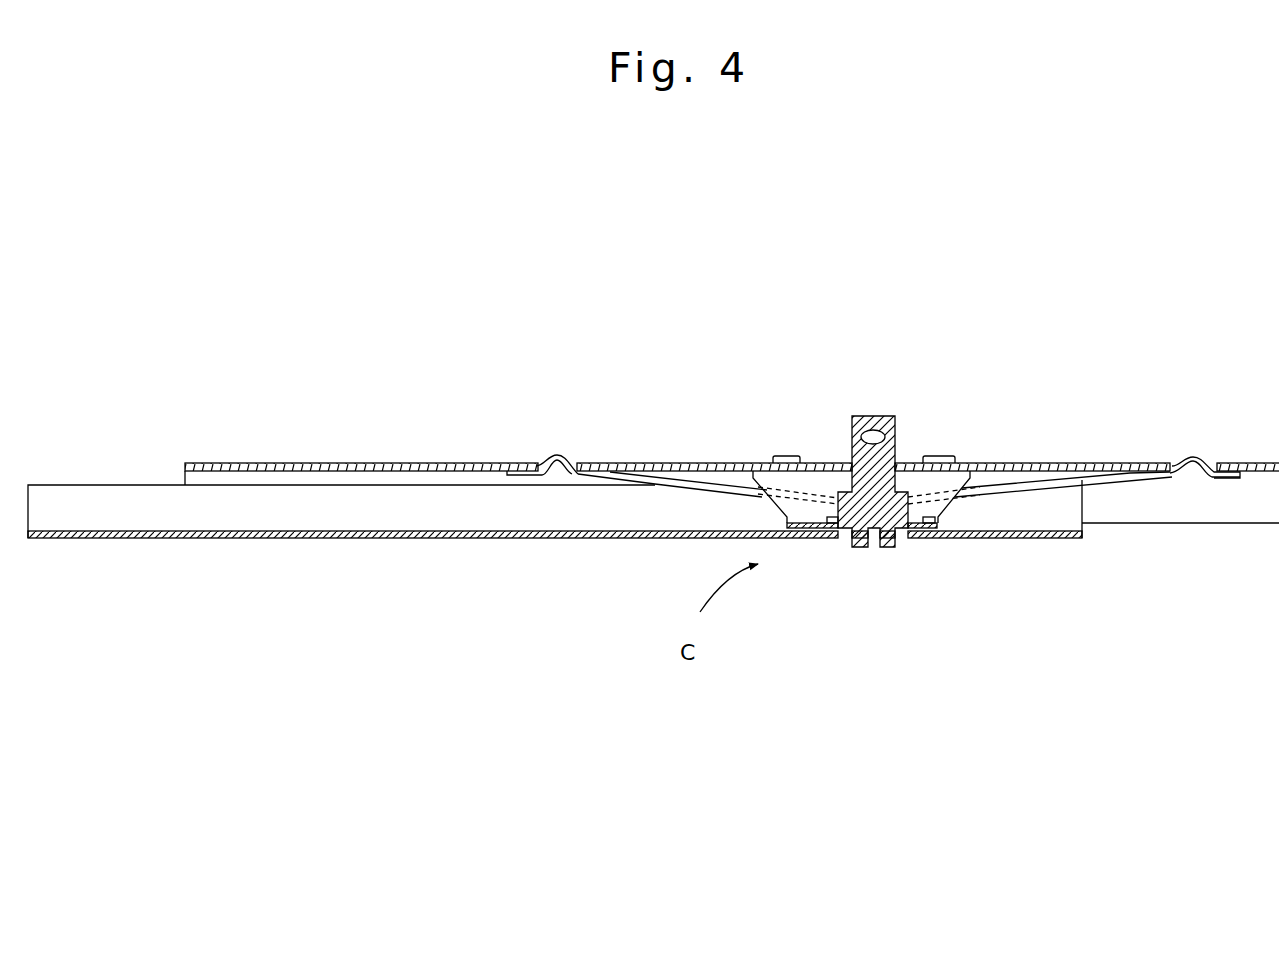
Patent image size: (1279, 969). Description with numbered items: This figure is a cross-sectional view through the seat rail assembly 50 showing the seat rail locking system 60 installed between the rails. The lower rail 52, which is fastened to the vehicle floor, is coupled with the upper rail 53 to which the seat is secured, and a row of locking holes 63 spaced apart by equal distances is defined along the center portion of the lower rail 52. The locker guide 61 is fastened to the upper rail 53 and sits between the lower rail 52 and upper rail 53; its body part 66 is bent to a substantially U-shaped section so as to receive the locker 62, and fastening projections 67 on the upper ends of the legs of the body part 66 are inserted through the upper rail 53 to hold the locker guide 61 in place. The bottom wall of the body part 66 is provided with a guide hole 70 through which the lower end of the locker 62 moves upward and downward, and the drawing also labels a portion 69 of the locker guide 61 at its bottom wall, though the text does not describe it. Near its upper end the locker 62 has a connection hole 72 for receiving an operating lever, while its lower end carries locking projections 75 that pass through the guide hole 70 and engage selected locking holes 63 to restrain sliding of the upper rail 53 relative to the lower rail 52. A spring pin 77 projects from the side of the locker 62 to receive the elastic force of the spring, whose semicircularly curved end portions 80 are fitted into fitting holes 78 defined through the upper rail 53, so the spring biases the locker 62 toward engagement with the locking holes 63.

The seat rail assembly 50 is at (596, 426).
The lower rail 52 is at (455, 538).
The upper rail 53 is at (363, 466).
The seat rail locking system 60 is at (893, 513).
The locker guide 61 is at (976, 512).
The locker 62 is at (857, 455).
The locking holes 63 is at (670, 538).
The body part 66 is at (982, 465).
The fastening projections 67 is at (950, 455).
The right flange 69 is at (935, 528).
The guide hole 70 is at (833, 518).
The connection hole 72 is at (850, 428).
The locking projections 75 is at (845, 547).
The spring pin 77 is at (868, 547).
The fitting holes 78 is at (538, 463).
The curved portions 80 is at (557, 466).